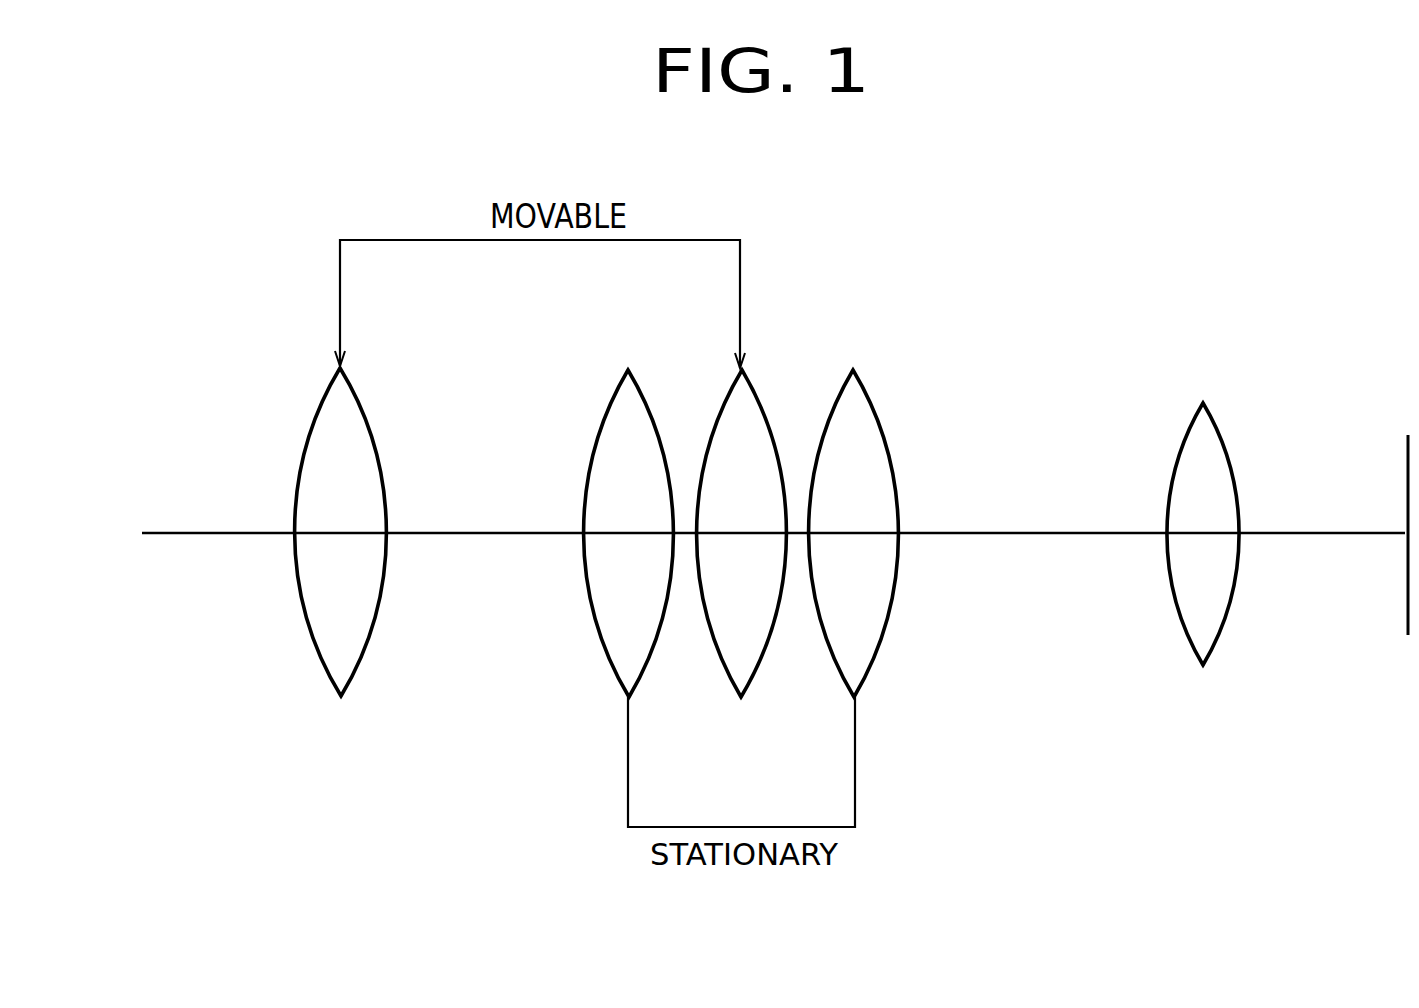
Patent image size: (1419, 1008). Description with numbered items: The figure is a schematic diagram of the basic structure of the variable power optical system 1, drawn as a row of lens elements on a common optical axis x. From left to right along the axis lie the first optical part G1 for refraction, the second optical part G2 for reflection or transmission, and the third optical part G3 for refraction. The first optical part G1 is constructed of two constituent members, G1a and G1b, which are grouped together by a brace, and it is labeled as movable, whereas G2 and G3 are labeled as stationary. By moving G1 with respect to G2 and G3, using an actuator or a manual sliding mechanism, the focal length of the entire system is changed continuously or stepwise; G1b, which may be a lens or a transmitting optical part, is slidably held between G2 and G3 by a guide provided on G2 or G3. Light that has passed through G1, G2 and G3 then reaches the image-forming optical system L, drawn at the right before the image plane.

The variable power optical system 1 is at (188, 338).
The image-forming optical system L is at (1046, 338).
The first optical part G1 is at (541, 636).
The first constituent member of first optical part G1a is at (353, 683).
The second constituent member of first optical part G1b is at (727, 678).
The second optical part G2 is at (629, 513).
The third optical part G3 is at (854, 513).